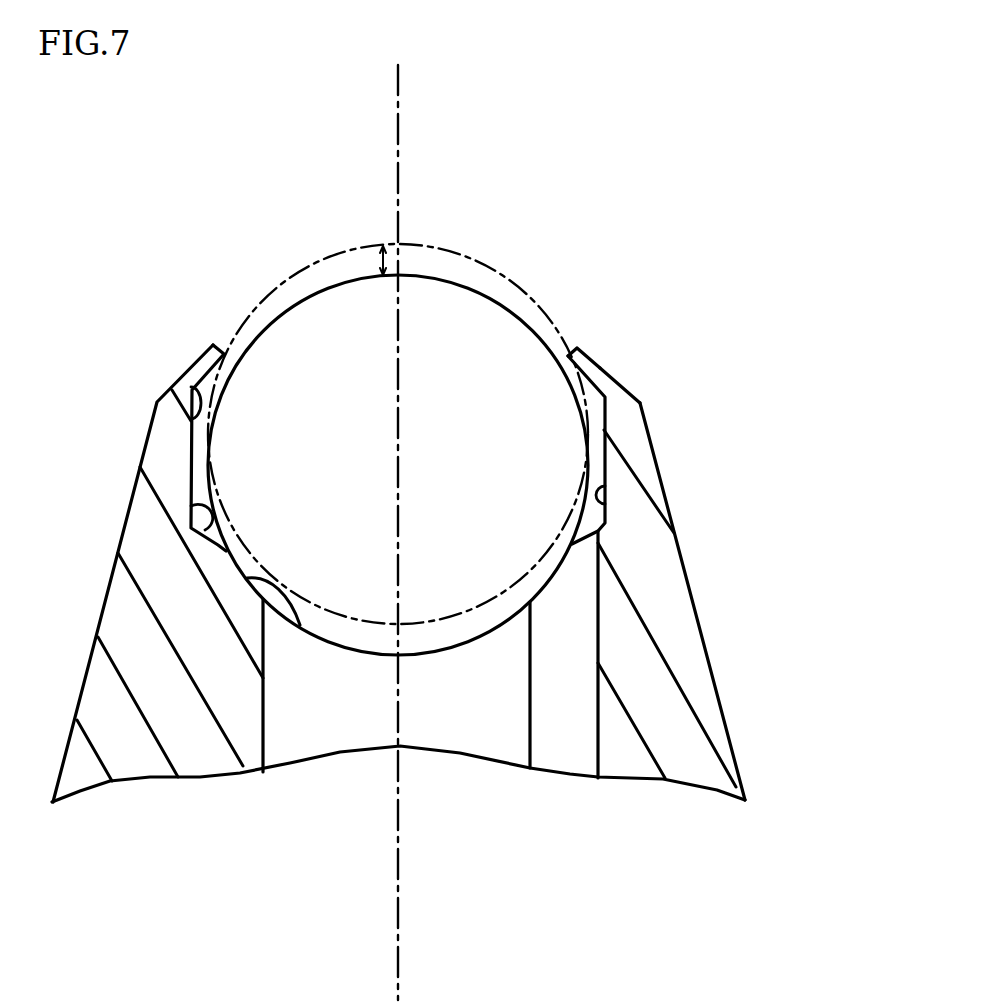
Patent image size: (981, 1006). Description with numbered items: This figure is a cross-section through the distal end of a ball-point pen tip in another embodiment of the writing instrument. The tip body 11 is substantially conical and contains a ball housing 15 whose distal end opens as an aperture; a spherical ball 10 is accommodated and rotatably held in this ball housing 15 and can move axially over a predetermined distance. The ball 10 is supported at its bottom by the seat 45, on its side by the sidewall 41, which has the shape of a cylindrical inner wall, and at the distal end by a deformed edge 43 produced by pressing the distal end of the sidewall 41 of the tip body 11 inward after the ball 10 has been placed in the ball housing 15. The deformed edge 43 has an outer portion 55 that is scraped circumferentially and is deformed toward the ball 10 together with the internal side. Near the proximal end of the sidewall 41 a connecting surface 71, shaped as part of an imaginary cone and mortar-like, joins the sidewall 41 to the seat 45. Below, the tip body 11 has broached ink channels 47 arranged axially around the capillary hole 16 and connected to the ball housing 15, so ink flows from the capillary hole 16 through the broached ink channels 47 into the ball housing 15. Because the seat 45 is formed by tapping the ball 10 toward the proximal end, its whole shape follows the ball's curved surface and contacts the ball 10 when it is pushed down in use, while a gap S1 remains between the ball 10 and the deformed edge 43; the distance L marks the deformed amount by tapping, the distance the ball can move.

The ball 10 is at (482, 323).
The tip body 11 is at (722, 616).
The ball housing 15 is at (593, 452).
The capillary hole 16 is at (478, 732).
The sidewall 41 is at (203, 372).
The deformed edge 43 is at (583, 352).
The seat 45 is at (304, 620).
The broached ink channels 47 is at (573, 750).
The outer portion 55 is at (623, 385).
The connecting surface 71 is at (206, 512).
The deformed amount by tapping L is at (380, 258).
The gap S1 is at (580, 347).